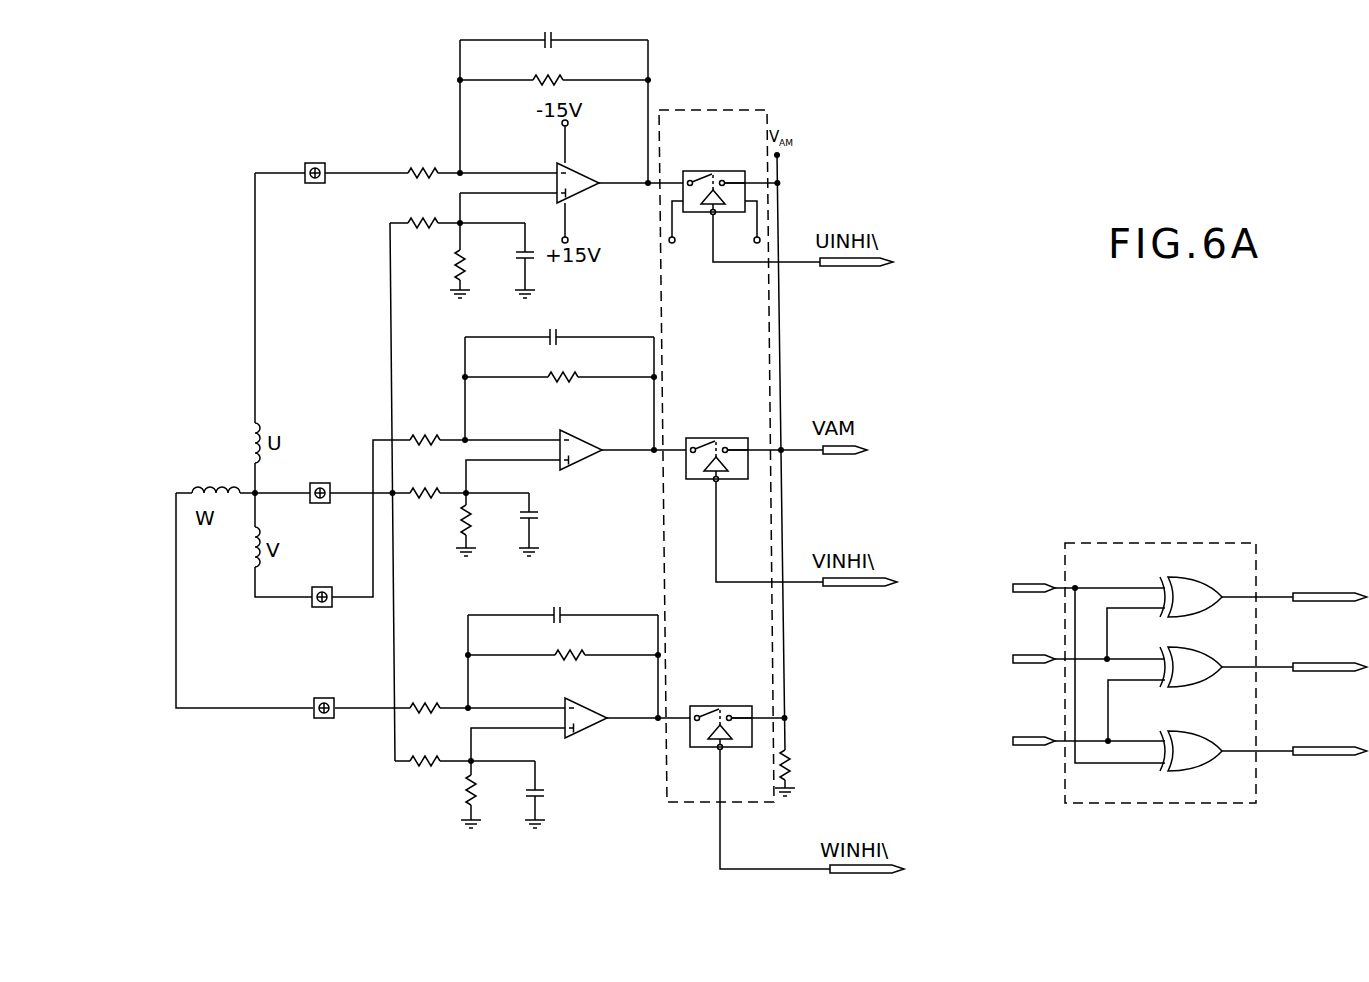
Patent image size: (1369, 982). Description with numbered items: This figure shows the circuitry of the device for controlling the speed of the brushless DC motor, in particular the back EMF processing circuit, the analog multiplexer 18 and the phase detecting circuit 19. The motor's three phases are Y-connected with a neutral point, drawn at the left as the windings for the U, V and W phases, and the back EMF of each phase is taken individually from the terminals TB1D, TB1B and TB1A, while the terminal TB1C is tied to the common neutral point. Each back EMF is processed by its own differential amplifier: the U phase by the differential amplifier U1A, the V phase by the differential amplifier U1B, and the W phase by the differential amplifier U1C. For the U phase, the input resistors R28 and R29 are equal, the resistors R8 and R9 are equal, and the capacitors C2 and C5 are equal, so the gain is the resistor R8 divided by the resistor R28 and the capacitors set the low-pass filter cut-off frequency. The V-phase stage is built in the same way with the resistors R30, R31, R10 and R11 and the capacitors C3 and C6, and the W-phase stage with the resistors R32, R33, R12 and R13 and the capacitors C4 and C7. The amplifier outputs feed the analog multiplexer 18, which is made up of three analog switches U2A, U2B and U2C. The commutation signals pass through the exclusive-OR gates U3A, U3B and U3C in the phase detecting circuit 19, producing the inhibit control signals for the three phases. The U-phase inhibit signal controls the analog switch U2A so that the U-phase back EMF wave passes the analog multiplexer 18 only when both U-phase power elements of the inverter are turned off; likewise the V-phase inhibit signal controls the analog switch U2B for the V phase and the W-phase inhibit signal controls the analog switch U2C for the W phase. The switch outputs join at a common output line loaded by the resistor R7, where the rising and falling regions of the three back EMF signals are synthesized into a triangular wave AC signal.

The analog multiplexer 18 is at (744, 465).
The phase detecting circuit 19 is at (1188, 647).
The differential amplifier U1A is at (592, 181).
The differential amplifier U1B is at (594, 439).
The differential amplifier U1C is at (599, 710).
The analog switch U2A is at (714, 193).
The analog switch U2B is at (717, 448).
The analog switch U2C is at (719, 714).
The exclusive-OR gate U3A is at (1188, 585).
The exclusive-OR gate U3B is at (1188, 655).
The exclusive-OR gate U3C is at (1188, 739).
The resistor R7 is at (801, 762).
The resistor R8 is at (551, 69).
The resistor R9 is at (476, 263).
The resistor R10 is at (564, 366).
The resistor R11 is at (486, 520).
The resistor R12 is at (580, 644).
The resistor R13 is at (491, 791).
The resistor R28 is at (415, 163).
The resistor R29 is at (416, 213).
The resistor R30 is at (429, 429).
The resistor R31 is at (429, 482).
The resistor R32 is at (431, 698).
The resistor R33 is at (432, 749).
The capacitor C2 is at (539, 267).
The capacitor C3 is at (545, 518).
The capacitor C4 is at (552, 798).
The capacitor C5 is at (554, 27).
The capacitor C6 is at (559, 324).
The capacitor C7 is at (563, 603).
The terminal TB1A is at (323, 697).
The terminal TB1B is at (320, 585).
The terminal TB1C is at (323, 481).
The terminal TB1D is at (314, 161).